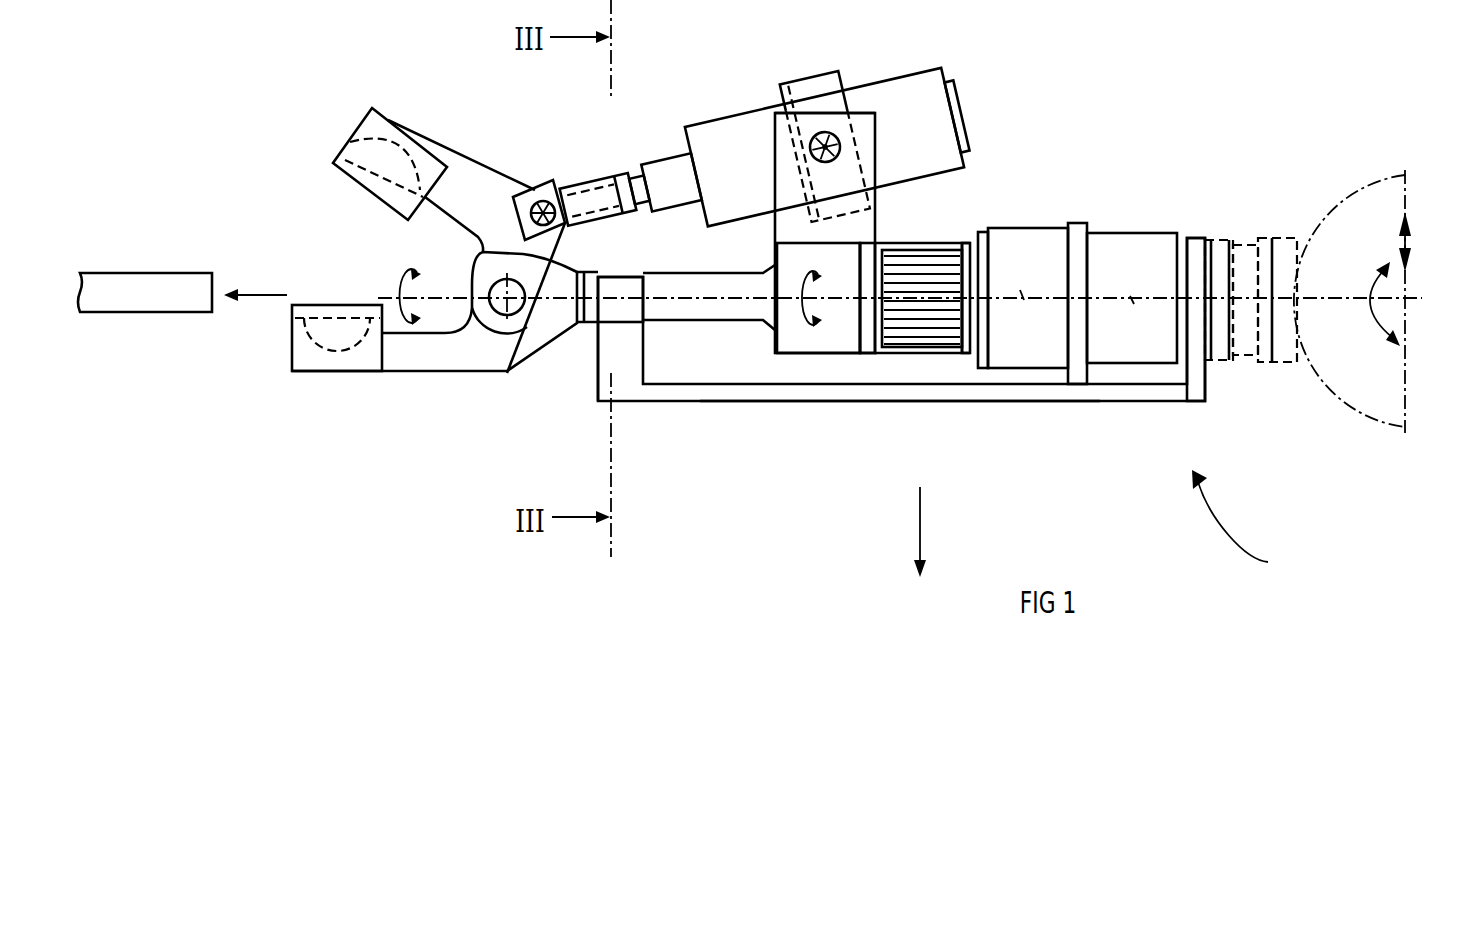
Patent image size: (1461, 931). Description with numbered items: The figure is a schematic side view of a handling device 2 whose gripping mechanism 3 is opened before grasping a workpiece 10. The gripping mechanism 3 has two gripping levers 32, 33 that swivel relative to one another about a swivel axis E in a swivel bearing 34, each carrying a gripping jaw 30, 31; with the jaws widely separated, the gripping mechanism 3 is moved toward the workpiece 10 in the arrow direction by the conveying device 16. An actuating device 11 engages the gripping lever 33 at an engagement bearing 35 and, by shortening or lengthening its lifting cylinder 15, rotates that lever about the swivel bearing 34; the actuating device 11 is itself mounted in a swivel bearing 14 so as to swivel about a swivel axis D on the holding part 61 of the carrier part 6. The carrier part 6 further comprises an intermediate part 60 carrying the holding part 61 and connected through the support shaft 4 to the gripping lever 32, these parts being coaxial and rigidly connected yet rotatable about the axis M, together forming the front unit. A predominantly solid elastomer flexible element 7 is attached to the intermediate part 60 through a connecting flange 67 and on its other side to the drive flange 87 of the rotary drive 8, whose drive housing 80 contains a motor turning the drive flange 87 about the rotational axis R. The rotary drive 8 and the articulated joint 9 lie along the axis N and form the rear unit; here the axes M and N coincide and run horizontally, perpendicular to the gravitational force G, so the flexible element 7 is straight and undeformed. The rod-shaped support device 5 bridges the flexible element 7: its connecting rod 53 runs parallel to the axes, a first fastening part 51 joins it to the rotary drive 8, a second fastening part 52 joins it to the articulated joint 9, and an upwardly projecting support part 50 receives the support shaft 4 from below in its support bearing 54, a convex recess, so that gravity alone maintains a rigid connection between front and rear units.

The handling device 2 is at (1239, 526).
The gripping mechanism 3 is at (434, 283).
The support shaft 4 is at (718, 292).
The support device 5 is at (871, 318).
The carrier part 6 is at (813, 340).
The flexible element 7 is at (933, 262).
The rotary drive 8 is at (1032, 335).
The articulated joint 9 is at (1265, 333).
The workpiece 10 is at (128, 290).
The actuating device 11 is at (732, 137).
The swivel bearing 14 is at (817, 131).
The lifting cylinder 15 is at (605, 172).
The conveying device 16 is at (1343, 232).
The gripping jaw 30 is at (338, 358).
The gripping jaw 31 is at (373, 130).
The gripping lever 32 is at (420, 348).
The gripping lever 33 is at (453, 167).
The swivel bearing 34 is at (477, 327).
The engagement bearing 35 is at (532, 187).
The support part 50 is at (605, 352).
The first fastening part 51 is at (1077, 247).
The second fastening part 52 is at (1193, 247).
The connecting rod 53 is at (920, 390).
The support bearing 54 is at (623, 288).
The intermediate part 60 is at (849, 287).
The holding part 61 is at (850, 230).
The connecting flange 67 is at (872, 327).
The drive housing 80 is at (1130, 248).
The drive flange 87 is at (970, 327).
The axis M is at (588, 285).
The swivel axis D is at (827, 131).
The swivel axis E is at (518, 348).
The gravitational force G is at (918, 515).
The axis N is at (1132, 300).
The rotational axis R is at (1022, 295).